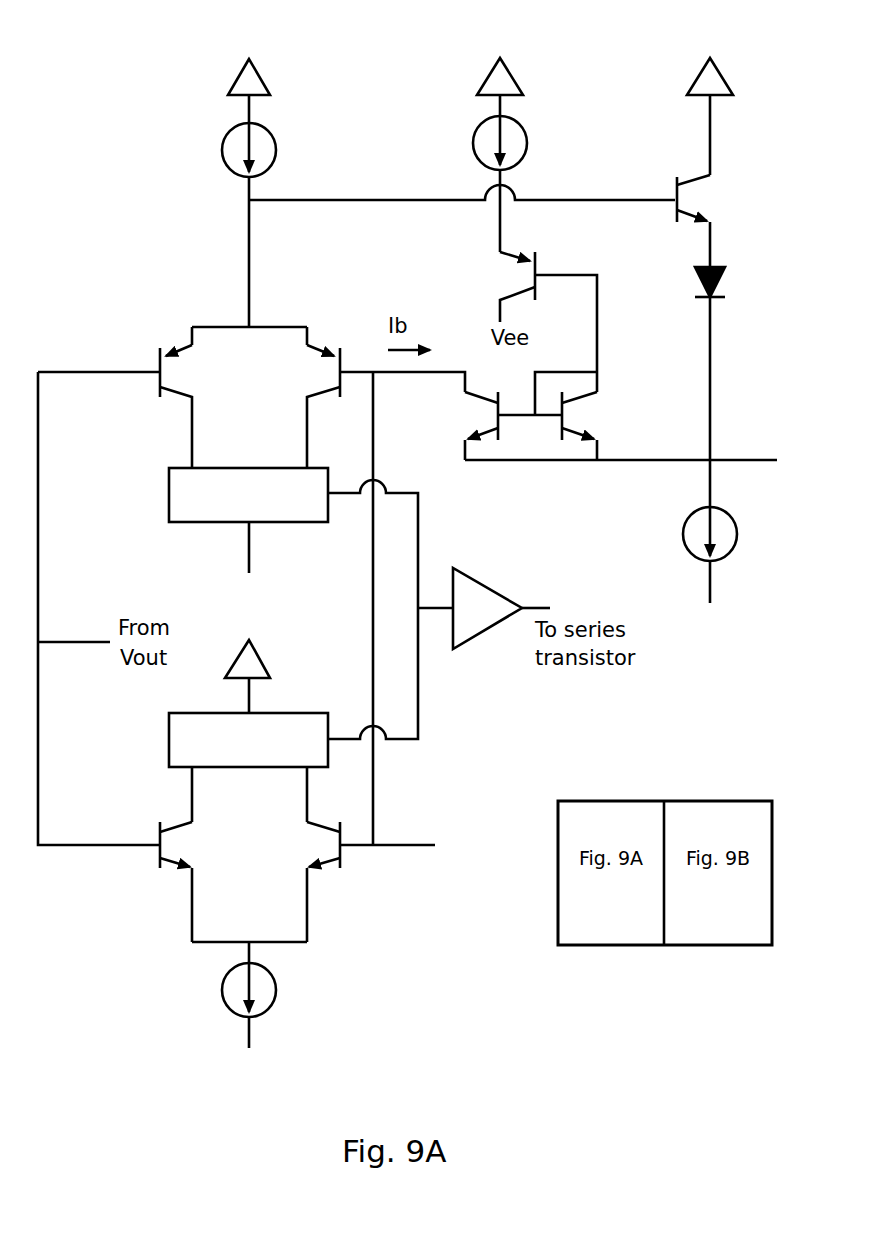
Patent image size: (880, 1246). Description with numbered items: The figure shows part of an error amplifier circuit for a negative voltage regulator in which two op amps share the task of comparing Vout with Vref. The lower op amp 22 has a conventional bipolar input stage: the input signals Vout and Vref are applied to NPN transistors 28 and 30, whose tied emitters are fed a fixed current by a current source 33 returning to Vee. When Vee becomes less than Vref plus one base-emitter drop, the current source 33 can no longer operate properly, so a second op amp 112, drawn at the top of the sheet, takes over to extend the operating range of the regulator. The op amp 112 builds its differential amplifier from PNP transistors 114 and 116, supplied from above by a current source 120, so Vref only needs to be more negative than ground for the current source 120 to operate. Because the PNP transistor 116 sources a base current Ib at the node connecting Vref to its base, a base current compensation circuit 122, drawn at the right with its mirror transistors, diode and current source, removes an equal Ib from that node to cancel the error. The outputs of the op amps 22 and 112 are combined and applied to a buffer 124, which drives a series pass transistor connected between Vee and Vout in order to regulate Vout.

The op amp 22 is at (261, 860).
The NPN transistor 28 is at (160, 878).
The NPN transistor 30 is at (310, 840).
The current source 33 is at (222, 990).
The op amp 112 is at (200, 398).
The PNP transistor 114 is at (162, 408).
The PNP transistor 116 is at (312, 367).
The current source 120 is at (223, 148).
The base current compensation circuit 122 is at (785, 145).
The buffer 124 is at (478, 578).